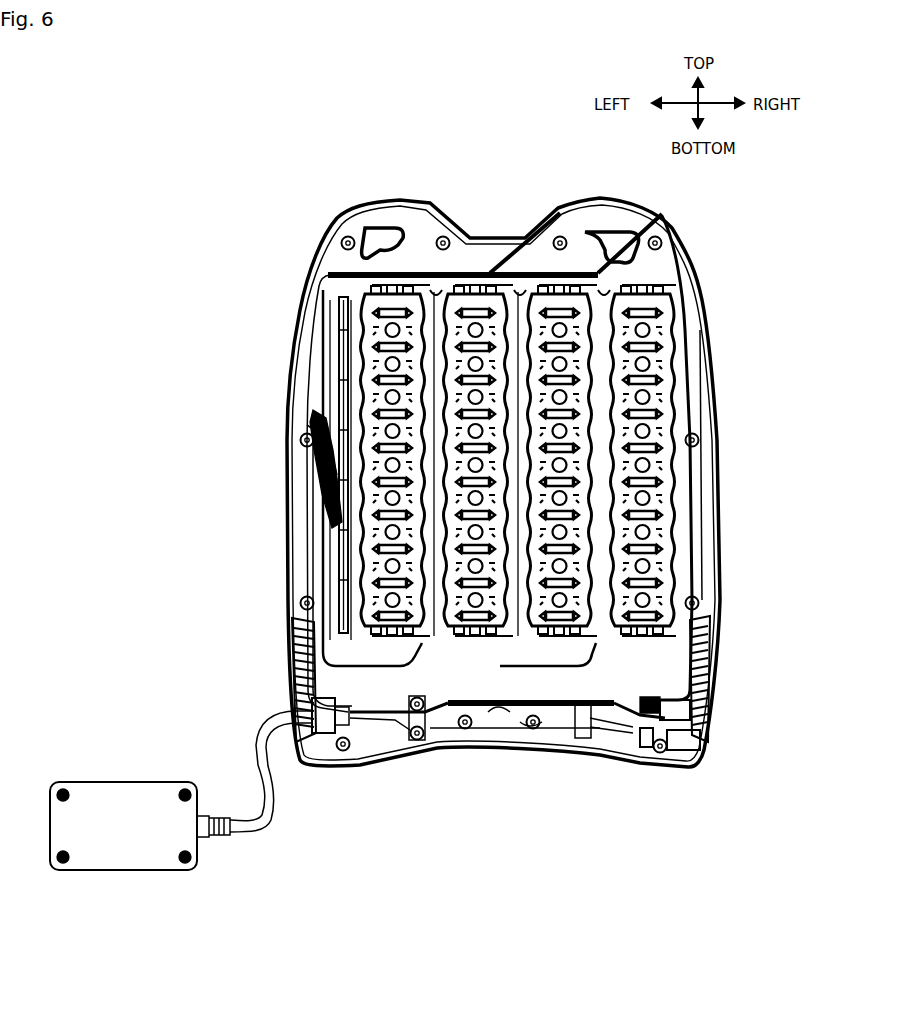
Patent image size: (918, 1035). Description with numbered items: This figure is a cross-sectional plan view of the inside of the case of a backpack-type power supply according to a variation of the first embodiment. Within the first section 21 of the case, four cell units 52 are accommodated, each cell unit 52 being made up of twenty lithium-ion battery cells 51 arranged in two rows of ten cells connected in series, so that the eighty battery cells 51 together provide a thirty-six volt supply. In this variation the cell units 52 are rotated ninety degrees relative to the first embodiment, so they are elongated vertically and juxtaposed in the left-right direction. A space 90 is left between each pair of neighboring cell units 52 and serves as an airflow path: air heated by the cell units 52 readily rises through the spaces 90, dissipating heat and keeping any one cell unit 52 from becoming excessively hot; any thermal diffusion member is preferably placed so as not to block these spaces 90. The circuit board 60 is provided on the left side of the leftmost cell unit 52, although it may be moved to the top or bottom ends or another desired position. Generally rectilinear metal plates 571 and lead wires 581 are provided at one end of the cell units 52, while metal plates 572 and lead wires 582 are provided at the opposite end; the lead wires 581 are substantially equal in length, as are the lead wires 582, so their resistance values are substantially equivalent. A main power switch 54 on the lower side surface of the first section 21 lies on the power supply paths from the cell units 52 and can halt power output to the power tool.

The first section 21 is at (295, 386).
The battery cell 51 is at (342, 298).
The cell unit 52 is at (452, 292).
The main power switch 54 is at (310, 708).
The circuit board 60 is at (340, 348).
The space 90 is at (418, 742).
The metal plate 571 is at (436, 292).
The metal plate 572 is at (435, 640).
The lead wire 581 is at (424, 290).
The lead wire 582 is at (388, 665).